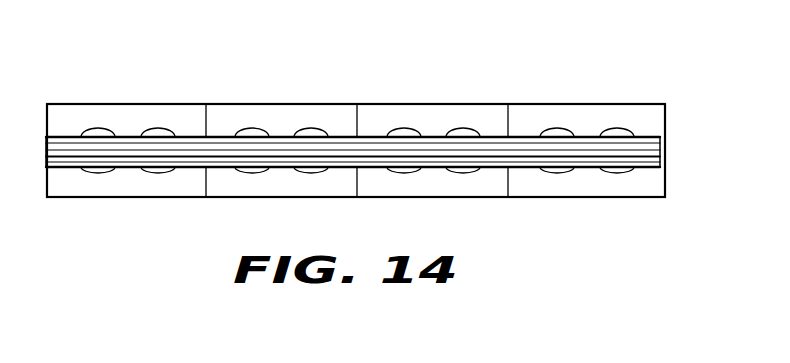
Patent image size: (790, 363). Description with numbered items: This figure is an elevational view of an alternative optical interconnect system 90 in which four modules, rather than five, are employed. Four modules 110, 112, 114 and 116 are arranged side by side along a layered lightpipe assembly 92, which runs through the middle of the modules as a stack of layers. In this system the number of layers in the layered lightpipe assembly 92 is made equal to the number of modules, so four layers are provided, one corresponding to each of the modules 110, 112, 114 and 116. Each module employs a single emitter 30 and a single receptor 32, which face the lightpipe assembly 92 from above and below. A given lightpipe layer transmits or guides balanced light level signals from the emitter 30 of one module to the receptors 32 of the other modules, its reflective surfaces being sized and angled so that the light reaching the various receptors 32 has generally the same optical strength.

The optical interconnect system 90 is at (366, 74).
The layered lightpipe assembly 92 is at (185, 134).
The module 110 is at (122, 112).
The module 112 is at (277, 110).
The module 114 is at (425, 110).
The module 116 is at (582, 110).
The emitter 30 is at (554, 210).
The receptor 32 is at (616, 210).